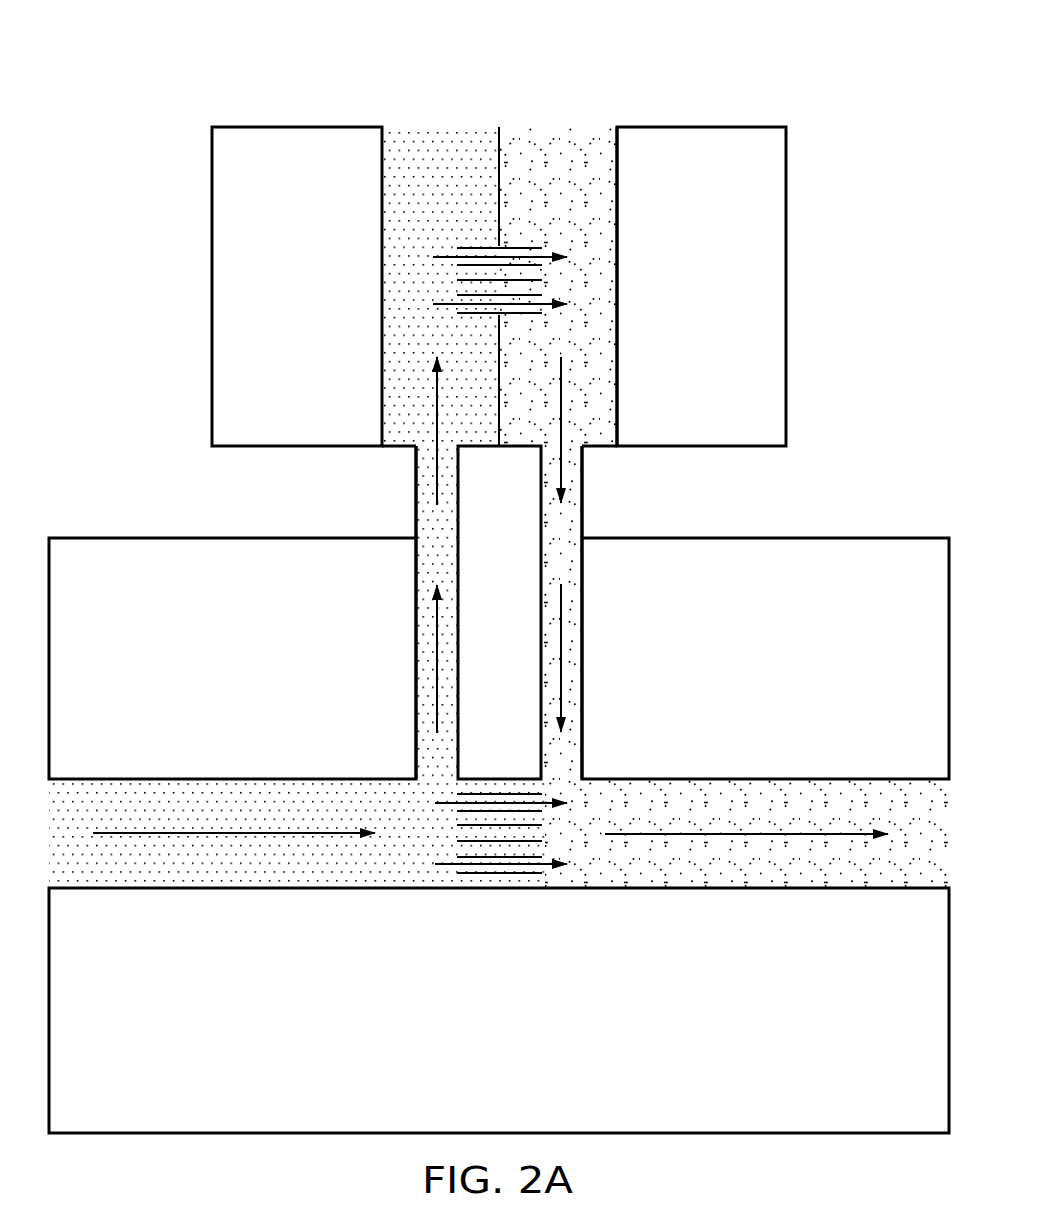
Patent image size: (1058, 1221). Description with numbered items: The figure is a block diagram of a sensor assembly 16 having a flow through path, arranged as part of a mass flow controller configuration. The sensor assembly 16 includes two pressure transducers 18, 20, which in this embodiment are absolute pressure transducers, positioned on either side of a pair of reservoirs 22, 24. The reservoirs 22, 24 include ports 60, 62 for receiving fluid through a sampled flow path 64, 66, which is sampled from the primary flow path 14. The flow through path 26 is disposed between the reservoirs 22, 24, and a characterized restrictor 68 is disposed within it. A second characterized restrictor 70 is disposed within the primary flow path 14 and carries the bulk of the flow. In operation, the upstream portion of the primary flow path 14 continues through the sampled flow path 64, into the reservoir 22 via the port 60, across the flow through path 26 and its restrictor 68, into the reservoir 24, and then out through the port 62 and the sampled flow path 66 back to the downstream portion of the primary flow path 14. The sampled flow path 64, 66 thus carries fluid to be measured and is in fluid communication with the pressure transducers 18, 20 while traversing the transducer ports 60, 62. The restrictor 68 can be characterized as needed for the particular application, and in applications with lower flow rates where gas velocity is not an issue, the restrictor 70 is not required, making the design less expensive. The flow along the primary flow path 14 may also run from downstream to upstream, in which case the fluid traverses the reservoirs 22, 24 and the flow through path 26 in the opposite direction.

The primary flow path 14 is at (230, 790).
The sensor assembly 16 is at (273, 78).
The pressure transducer 18 is at (212, 262).
The pressure transducer 20 is at (786, 262).
The reservoir 22 is at (382, 213).
The reservoir 24 is at (617, 213).
The flow through path 26 is at (520, 245).
The port 60 is at (413, 450).
The port 62 is at (587, 450).
The sampled flow path 64 is at (416, 658).
The sampled flow path 66 is at (583, 645).
The characterized restrictor 68 is at (570, 278).
The characterized restrictor 70 is at (568, 849).